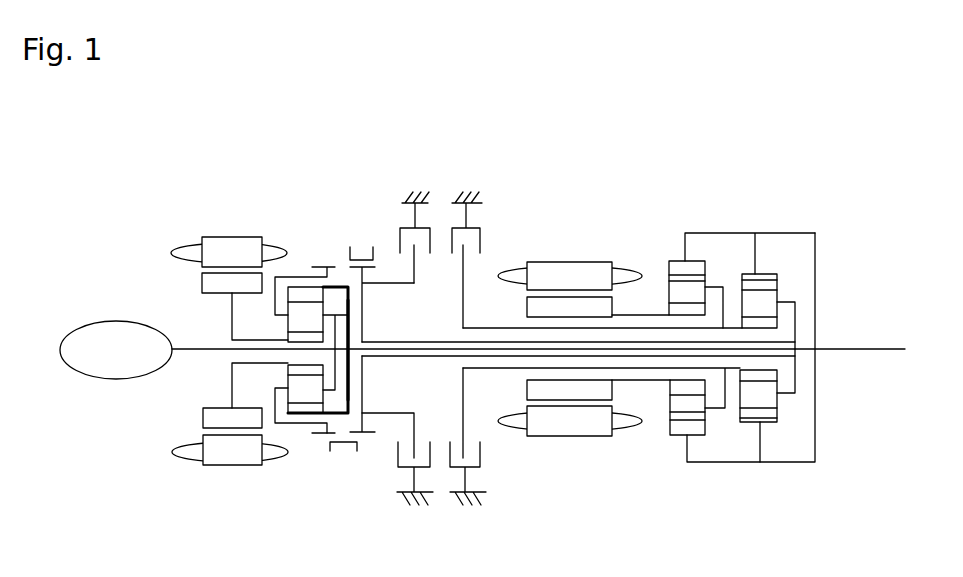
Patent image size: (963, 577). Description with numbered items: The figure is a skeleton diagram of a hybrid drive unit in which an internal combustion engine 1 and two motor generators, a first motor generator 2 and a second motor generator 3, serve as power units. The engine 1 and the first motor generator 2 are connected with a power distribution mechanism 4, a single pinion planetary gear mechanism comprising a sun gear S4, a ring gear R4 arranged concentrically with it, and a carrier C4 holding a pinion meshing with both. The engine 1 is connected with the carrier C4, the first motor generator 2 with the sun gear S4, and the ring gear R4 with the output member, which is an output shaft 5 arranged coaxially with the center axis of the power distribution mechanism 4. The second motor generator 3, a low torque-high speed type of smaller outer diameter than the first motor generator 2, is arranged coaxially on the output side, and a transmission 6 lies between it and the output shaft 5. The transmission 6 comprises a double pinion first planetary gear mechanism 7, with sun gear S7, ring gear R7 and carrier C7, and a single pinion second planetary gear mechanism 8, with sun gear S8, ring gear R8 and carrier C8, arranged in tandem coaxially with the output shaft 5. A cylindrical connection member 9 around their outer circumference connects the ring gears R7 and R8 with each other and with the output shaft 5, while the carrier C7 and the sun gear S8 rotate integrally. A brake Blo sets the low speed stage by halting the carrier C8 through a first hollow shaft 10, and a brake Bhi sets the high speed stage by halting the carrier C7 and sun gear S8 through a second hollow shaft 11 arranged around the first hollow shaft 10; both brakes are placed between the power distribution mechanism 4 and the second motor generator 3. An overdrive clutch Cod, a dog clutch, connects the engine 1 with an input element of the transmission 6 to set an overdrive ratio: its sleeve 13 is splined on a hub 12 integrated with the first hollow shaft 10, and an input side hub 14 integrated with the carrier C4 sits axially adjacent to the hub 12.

The internal combustion engine 1 is at (110, 322).
The first motor generator 2 is at (203, 237).
The second motor generator 3 is at (612, 262).
The power distribution mechanism 4 is at (319, 399).
The output shaft 5 is at (857, 348).
The transmission 6 is at (660, 345).
The first planetary gear mechanism 7 is at (601, 315).
The second planetary gear mechanism 8 is at (799, 406).
The connection member 9 is at (738, 233).
The first hollow shaft 10 is at (410, 356).
The second hollow shaft 11 is at (473, 328).
The hub 12 is at (367, 432).
The sleeve 13 is at (343, 450).
The input side hub 14 is at (324, 436).
The ring gear R4 is at (288, 300).
The sun gear S4 is at (288, 372).
The carrier C4 is at (348, 315).
The overdrive clutch Cod is at (348, 234).
The brake Blo is at (397, 337).
The brake Bhi is at (469, 337).
The sun gear S7 is at (670, 387).
The ring gear R7 is at (673, 436).
The carrier C7 is at (718, 409).
The sun gear S8 is at (779, 368).
The ring gear R8 is at (777, 442).
The carrier C8 is at (797, 394).